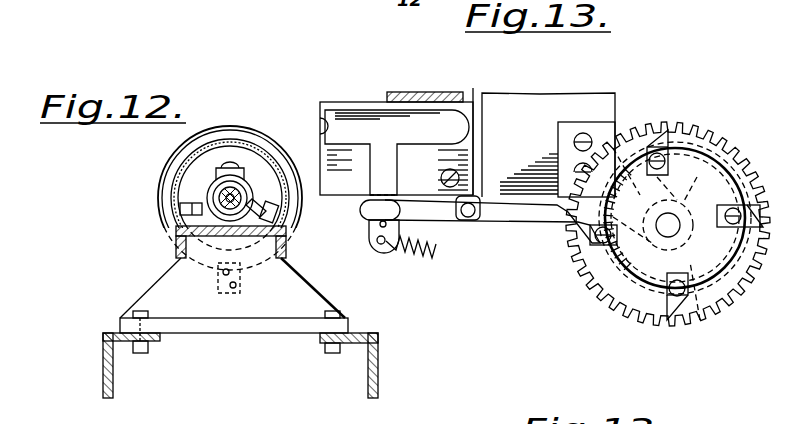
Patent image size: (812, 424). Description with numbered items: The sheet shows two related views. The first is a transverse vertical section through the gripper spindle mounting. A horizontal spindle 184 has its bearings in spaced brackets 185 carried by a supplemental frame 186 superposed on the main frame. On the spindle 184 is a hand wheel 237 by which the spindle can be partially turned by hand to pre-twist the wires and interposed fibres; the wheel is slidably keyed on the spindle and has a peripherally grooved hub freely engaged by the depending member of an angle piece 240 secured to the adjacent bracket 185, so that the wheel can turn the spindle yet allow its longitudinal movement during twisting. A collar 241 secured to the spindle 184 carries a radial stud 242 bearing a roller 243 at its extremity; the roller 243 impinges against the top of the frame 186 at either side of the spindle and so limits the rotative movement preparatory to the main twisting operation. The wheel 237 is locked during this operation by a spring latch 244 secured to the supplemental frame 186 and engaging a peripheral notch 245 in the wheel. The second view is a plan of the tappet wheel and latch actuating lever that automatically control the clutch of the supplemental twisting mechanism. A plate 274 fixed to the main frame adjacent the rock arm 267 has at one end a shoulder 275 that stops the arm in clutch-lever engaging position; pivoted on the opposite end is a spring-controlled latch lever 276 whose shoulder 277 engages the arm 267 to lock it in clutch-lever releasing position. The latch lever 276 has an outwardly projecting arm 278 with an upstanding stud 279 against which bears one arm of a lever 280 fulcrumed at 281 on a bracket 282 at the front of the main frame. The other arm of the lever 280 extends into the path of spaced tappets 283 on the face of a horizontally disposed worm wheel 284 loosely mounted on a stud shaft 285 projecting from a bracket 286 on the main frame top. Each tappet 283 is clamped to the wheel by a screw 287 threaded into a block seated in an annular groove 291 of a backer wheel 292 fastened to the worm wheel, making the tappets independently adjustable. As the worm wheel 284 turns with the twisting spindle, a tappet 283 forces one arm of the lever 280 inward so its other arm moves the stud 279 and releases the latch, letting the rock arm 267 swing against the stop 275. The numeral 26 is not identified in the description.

In FIG. 12, the hand wheel 237 is at (233, 162).
In FIG. 12, the angle piece 240 is at (220, 160).
In FIG. 12, the collar 241 is at (213, 180).
In FIG. 12, the horizontal spindle 184 is at (213, 197).
In FIG. 12, the bracket 185 is at (203, 214).
In FIG. 12, the supplemental frame 186 is at (120, 318).
In FIG. 12, the radial stud 242 is at (250, 219).
In FIG. 12, the roller 243 is at (296, 210).
In FIG. 12, the spring latch 244 is at (230, 293).
In FIG. 12, the peripheral notch 245 is at (218, 270).
In FIG. 13, the guide 26 is at (372, 104).
In FIG. 13, the rock arm 267 is at (417, 92).
In FIG. 13, the plate 274 is at (396, 141).
In FIG. 13, the shoulder 275 is at (472, 92).
In FIG. 13, the latch lever 276 is at (350, 122).
In FIG. 13, the shoulder 277 is at (462, 112).
In FIG. 13, the arm 278 is at (388, 252).
In FIG. 13, the stud 279 is at (388, 220).
In FIG. 13, the lever 280 is at (510, 216).
In FIG. 13, the fulcrum 281 is at (468, 217).
In FIG. 13, the bracket 282 is at (487, 197).
In FIG. 13, the tappets 283 is at (669, 131).
In FIG. 13, the worm wheel 284 is at (723, 292).
In FIG. 13, the stud shaft 285 is at (668, 232).
In FIG. 13, the bracket 286 is at (693, 177).
In FIG. 13, the screw 287 is at (597, 247).
In FIG. 13, the annular groove 291 is at (612, 292).
In FIG. 13, the backer wheel 292 is at (707, 250).